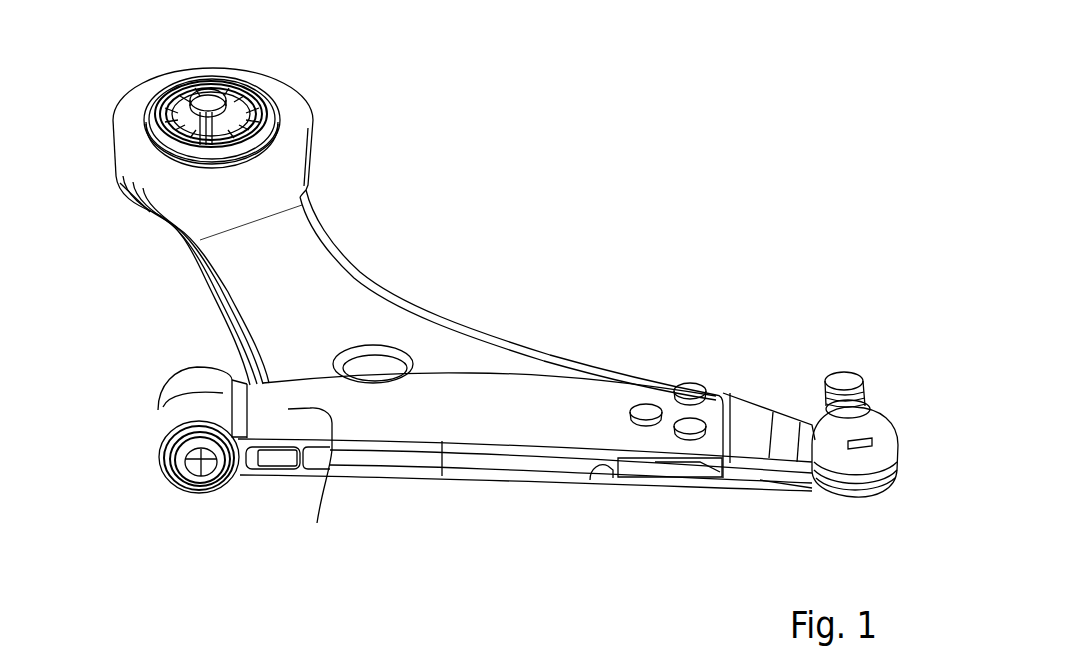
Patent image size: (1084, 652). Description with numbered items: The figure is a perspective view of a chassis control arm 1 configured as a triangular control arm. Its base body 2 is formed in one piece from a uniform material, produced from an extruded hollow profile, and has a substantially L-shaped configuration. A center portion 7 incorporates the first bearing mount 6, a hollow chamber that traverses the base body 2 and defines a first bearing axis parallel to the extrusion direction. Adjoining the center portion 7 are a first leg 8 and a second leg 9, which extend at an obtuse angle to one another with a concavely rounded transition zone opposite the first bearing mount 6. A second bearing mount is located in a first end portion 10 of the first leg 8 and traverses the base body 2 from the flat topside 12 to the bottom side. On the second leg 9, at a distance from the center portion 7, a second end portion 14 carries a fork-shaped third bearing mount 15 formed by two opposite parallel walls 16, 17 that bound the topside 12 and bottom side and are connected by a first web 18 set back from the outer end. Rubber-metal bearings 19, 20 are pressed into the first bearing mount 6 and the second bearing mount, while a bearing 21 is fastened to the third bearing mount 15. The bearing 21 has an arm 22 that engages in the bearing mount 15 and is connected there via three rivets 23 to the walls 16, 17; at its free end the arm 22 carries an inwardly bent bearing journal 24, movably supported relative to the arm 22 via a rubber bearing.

The chassis control arm 1 is at (572, 170).
The base body 2 is at (350, 303).
The first bearing mount 6 is at (185, 420).
The center portion 7 is at (310, 485).
The first leg 8 is at (255, 264).
The second leg 9 is at (517, 428).
The first end portion 10 is at (275, 82).
The topside 12 is at (293, 117).
The second end portion 14 is at (647, 393).
The third bearing mount 15 is at (640, 465).
The wall 16 is at (442, 476).
The wall 17 is at (375, 473).
The first web 18 is at (590, 480).
The bearing 19 is at (185, 490).
The bearing 20 is at (177, 83).
The bearing 21 is at (782, 482).
The arm 22 is at (748, 425).
The rivets 23 is at (693, 388).
The bearing journal 24 is at (883, 410).